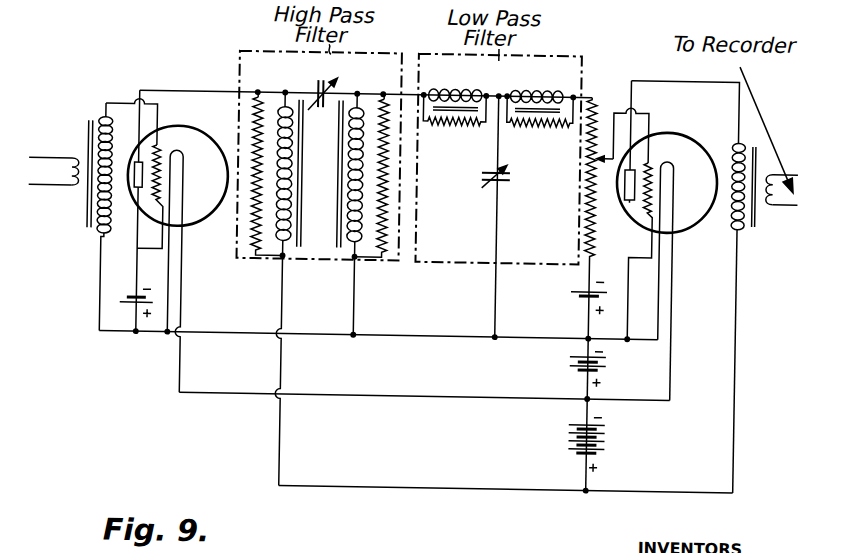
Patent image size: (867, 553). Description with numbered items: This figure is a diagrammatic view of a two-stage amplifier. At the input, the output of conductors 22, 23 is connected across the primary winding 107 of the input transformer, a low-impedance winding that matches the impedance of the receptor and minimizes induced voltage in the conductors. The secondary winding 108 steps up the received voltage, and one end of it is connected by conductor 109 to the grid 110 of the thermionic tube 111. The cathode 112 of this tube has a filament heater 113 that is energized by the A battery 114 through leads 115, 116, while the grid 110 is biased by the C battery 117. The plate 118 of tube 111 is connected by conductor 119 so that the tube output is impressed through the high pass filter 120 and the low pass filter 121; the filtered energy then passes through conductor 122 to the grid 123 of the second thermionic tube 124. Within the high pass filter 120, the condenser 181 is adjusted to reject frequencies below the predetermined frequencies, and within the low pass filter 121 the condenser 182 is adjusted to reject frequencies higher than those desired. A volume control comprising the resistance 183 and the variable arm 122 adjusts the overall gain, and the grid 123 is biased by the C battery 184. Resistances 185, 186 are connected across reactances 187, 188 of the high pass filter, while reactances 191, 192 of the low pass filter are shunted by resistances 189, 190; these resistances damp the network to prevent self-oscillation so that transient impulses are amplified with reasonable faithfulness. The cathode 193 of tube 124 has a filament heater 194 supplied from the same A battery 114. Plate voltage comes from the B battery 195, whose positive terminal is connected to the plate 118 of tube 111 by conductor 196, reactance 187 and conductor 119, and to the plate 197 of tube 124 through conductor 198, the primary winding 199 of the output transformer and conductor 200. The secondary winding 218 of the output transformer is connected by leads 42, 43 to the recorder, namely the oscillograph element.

The conductor 22 is at (42, 194).
The conductor 23 is at (45, 163).
The primary winding 107 is at (86, 203).
The secondary winding 108 is at (113, 132).
The conductor 109 is at (122, 97).
The grid 110 is at (166, 148).
The thermionic tube 111 is at (194, 126).
The cathode 112 is at (184, 158).
The filament heater 113 is at (185, 200).
The A battery 114 is at (606, 364).
The lead 115 is at (403, 340).
The lead 116 is at (424, 391).
The C battery 117 is at (133, 300).
The plate 118 is at (136, 196).
The conductor 119 is at (183, 89).
The high pass filter 120 is at (374, 48).
The low pass filter 121 is at (557, 49).
The conductor 122 is at (622, 109).
The grid 123 is at (650, 160).
The thermionic tube 124 is at (695, 126).
The condenser 181 is at (322, 111).
The condenser 182 is at (515, 171).
The resistance 183 is at (594, 235).
The C battery 184 is at (574, 296).
The resistance 185 is at (249, 228).
The resistance 186 is at (386, 215).
The reactance 187 is at (292, 209).
The reactance 188 is at (345, 162).
The resistance 189 is at (452, 125).
The resistance 190 is at (533, 127).
The reactance 191 is at (452, 82).
The reactance 192 is at (543, 80).
The cathode 193 is at (675, 159).
The filament heater 194 is at (677, 191).
The B battery 195 is at (570, 438).
The conductor 196 is at (396, 486).
The plate 197 is at (626, 196).
The conductor 198 is at (734, 403).
The primary winding 199 is at (736, 226).
The conductor 200 is at (686, 70).
The secondary winding 218 is at (758, 226).
The lead 42 is at (800, 167).
The lead 43 is at (779, 202).